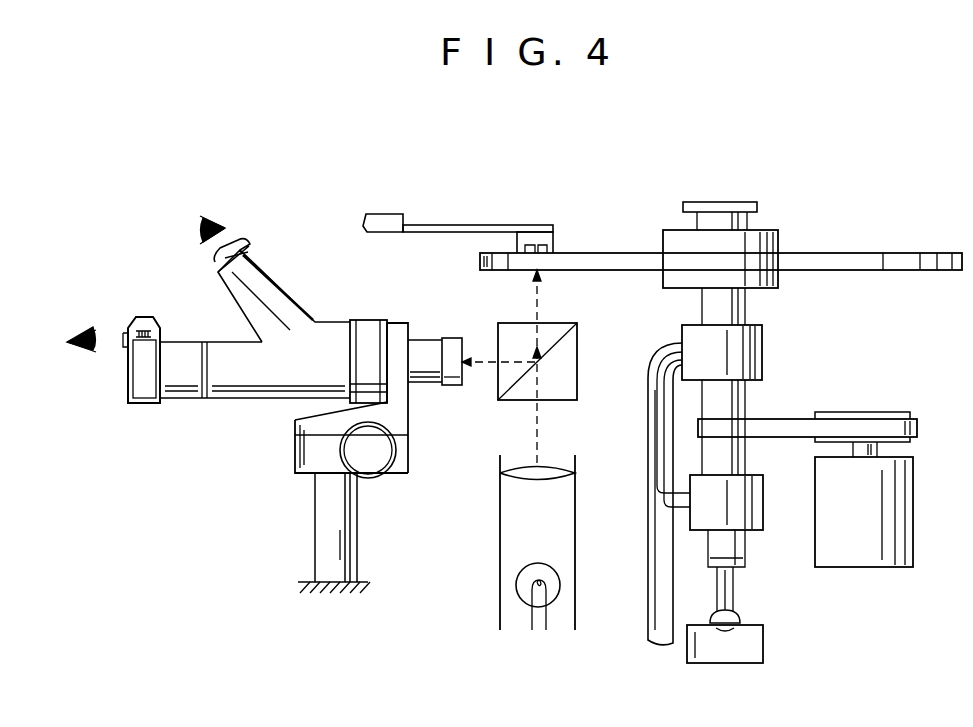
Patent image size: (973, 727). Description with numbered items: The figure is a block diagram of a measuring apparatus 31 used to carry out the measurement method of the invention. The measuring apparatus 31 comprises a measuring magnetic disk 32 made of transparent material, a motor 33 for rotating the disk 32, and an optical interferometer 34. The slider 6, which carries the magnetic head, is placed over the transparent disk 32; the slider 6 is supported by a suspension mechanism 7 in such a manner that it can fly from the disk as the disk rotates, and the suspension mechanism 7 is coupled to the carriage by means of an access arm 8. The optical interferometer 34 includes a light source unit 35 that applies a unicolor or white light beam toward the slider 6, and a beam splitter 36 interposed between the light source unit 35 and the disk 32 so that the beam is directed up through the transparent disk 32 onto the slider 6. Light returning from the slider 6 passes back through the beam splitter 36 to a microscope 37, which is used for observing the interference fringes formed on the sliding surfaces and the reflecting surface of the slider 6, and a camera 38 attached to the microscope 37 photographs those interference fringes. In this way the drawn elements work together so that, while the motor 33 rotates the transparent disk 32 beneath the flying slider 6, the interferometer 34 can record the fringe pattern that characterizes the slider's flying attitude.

The slider 6 is at (553, 235).
The suspension mechanism 7 is at (463, 225).
The access arm 8 is at (378, 220).
The measuring apparatus 31 is at (805, 215).
The measuring magnetic disk 32 is at (879, 252).
The motor 33 is at (778, 405).
The optical interferometer 34 is at (437, 443).
The light source unit 35 is at (498, 547).
The beam splitter 36 is at (577, 378).
The microscope 37 is at (325, 332).
The camera 38 is at (123, 385).